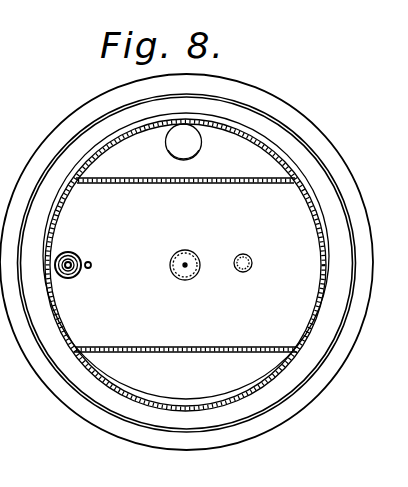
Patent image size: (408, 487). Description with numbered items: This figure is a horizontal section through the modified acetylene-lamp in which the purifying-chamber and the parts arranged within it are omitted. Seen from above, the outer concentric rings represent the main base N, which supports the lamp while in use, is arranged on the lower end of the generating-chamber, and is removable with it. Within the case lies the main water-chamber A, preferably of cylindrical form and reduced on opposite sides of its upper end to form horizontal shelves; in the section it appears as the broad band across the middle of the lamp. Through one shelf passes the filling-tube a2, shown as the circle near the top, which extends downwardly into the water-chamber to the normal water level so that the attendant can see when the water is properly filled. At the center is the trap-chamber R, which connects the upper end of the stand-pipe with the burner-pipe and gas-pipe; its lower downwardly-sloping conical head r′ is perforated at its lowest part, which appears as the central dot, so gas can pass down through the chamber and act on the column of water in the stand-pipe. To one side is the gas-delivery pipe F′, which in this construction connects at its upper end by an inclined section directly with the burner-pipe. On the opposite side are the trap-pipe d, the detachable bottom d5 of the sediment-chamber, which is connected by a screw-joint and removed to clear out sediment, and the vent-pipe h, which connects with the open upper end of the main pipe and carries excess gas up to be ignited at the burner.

The main base N is at (290, 430).
The main water-chamber A is at (77, 342).
The filling-tube a2 is at (202, 148).
The conical head r′ is at (215, 218).
The trap-chamber R is at (182, 280).
The gas-delivery pipe F′ is at (287, 243).
The bottom of the sediment-chamber d5 is at (75, 255).
The trap-pipe d is at (91, 265).
The vent-pipe h is at (70, 278).